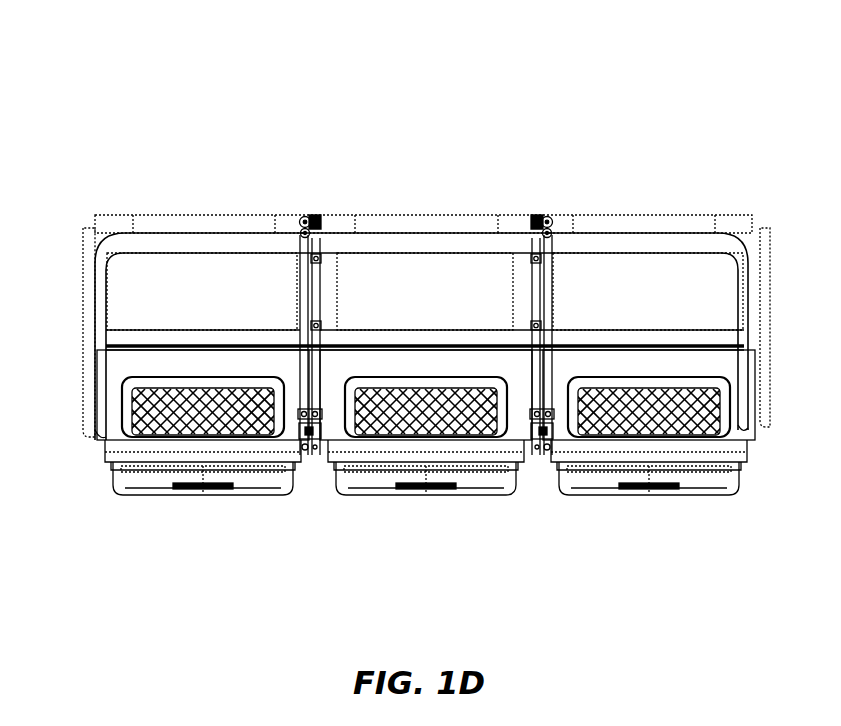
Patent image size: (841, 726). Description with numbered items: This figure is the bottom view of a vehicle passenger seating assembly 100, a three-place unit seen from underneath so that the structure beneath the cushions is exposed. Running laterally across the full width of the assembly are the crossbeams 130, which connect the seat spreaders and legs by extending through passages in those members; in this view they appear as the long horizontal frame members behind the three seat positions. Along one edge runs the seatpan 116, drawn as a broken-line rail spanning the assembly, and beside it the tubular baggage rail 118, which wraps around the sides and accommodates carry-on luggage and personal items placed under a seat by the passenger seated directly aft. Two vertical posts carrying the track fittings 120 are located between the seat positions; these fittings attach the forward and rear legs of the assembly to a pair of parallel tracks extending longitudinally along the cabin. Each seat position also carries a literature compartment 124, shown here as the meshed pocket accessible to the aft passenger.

The passenger seating assembly 100 is at (72, 88).
The seatpan 116 is at (387, 221).
The baggage rail 118 is at (677, 232).
The track fittings 120 is at (301, 218).
The literature compartment 124 is at (335, 398).
The crossbeams 130 is at (213, 340).